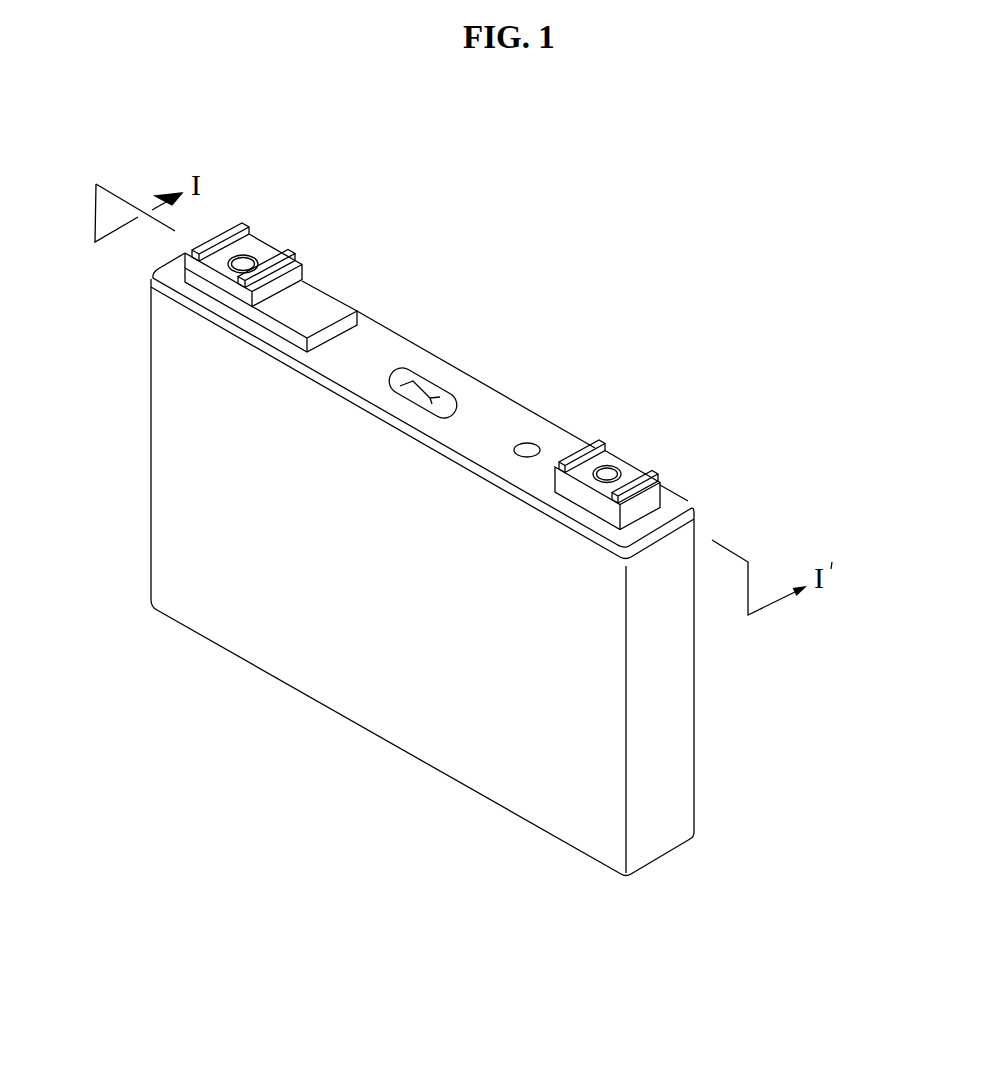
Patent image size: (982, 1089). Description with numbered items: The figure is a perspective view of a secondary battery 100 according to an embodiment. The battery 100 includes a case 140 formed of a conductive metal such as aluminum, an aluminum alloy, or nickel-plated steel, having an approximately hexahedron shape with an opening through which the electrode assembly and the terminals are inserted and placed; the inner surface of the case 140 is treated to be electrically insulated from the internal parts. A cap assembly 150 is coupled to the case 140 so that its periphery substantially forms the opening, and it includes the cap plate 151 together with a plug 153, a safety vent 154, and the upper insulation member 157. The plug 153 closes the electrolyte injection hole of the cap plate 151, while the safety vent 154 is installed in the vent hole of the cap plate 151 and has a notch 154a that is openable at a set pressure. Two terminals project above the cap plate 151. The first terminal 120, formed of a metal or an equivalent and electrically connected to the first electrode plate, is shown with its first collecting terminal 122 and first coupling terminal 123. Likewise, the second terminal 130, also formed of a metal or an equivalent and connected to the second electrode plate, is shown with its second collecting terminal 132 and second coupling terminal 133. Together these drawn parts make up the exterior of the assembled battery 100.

The secondary battery 100 is at (720, 222).
The first terminal 120 is at (320, 247).
The first collecting terminal 122 is at (244, 259).
The first coupling terminal 123 is at (267, 263).
The second terminal 130 is at (652, 436).
The second collecting terminal 132 is at (604, 468).
The second coupling terminal 133 is at (630, 470).
The case 140 is at (367, 712).
The cap assembly 150 is at (505, 388).
The cap plate 151 is at (367, 343).
The plug 153 is at (528, 441).
The safety vent 154 is at (425, 378).
The notch 154a is at (430, 393).
The upper insulation member 157 is at (322, 305).